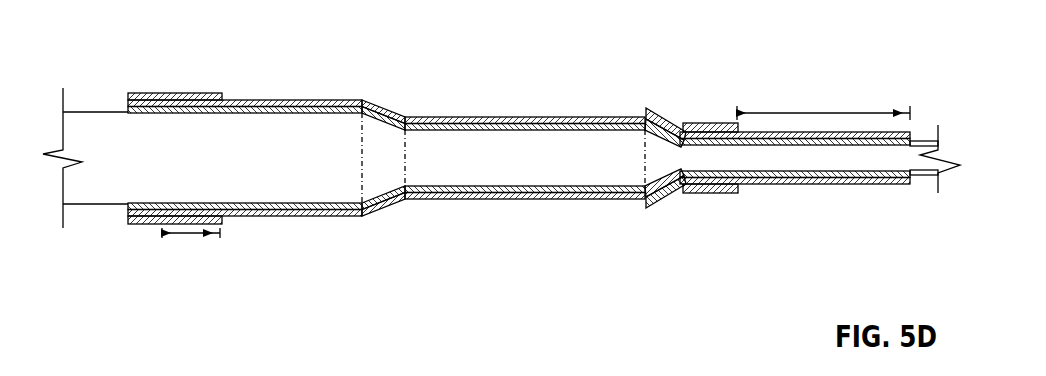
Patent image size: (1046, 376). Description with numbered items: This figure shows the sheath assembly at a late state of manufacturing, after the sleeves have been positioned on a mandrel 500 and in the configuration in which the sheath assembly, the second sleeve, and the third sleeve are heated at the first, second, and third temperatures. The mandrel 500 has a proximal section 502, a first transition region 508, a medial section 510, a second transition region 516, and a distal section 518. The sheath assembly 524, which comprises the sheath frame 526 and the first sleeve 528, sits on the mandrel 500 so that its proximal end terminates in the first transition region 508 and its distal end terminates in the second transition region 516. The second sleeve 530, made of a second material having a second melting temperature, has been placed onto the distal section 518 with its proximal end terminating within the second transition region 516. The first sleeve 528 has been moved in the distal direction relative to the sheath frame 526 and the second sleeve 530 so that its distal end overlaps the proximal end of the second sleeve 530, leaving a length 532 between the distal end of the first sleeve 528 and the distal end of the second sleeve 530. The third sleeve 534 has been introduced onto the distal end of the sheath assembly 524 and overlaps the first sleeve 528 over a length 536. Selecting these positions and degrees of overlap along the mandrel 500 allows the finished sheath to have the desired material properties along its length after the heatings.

The mandrel 500 is at (138, 55).
The proximal section 502 is at (307, 168).
The first transition region 508 is at (372, 158).
The medial section 510 is at (507, 158).
The second transition region 516 is at (673, 157).
The distal section 518 is at (770, 157).
The sheath assembly 524 is at (645, 110).
The sheath frame 526 is at (243, 110).
The first sleeve 528 is at (383, 110).
The second sleeve 530 is at (709, 130).
The length 532 is at (822, 110).
The third sleeve 534 is at (182, 96).
The length 536 is at (187, 238).